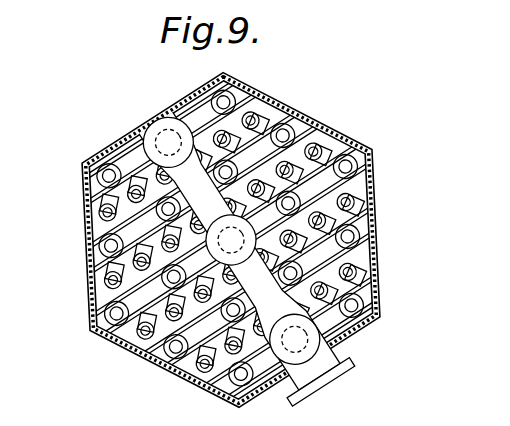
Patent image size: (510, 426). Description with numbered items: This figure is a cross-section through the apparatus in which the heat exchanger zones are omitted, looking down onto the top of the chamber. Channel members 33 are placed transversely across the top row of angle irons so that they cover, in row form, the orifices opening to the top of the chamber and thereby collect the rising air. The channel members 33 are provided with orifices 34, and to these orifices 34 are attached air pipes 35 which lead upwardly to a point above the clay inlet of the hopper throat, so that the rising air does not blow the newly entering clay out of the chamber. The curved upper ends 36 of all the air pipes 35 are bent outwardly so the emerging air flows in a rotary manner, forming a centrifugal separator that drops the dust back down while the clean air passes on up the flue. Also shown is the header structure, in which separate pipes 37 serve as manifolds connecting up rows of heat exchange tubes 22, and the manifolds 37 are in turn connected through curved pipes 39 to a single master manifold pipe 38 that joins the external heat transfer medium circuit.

The heat exchange tubes 22 is at (378, 303).
The channel members 33 is at (352, 262).
The orifices 34 is at (357, 277).
The pipes 35 is at (317, 147).
The curved upper ends 36 is at (306, 158).
The pipes 37 is at (358, 183).
The master manifold pipe 38 is at (323, 364).
The curved pipes 39 is at (365, 151).